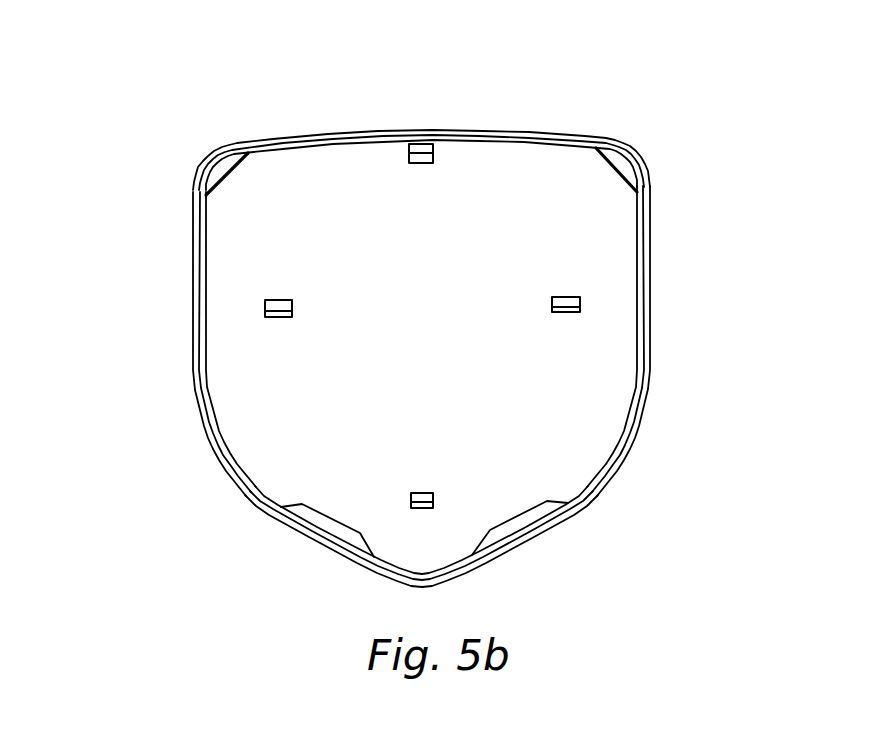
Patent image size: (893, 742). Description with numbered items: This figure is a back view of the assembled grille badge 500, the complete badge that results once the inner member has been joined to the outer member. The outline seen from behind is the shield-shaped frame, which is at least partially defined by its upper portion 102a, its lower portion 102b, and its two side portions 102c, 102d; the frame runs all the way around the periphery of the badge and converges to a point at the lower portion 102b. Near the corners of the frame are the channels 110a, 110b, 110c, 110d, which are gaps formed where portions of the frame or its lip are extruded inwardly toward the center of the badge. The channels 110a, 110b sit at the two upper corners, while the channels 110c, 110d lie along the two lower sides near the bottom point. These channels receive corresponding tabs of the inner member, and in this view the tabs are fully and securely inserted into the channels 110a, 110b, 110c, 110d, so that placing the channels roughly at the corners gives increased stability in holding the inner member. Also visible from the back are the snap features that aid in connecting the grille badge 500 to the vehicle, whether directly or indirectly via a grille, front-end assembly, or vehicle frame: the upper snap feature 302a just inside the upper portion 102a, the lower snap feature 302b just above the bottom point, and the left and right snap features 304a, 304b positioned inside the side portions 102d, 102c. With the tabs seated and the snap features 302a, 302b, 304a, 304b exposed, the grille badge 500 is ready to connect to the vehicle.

The assembled grille badge 500 is at (419, 322).
The upper portion of frame 102a is at (293, 140).
The lower portion of frame 102b is at (398, 572).
The side portion of frame 102c is at (648, 362).
The side portion of frame 102d is at (202, 408).
The channel 110a is at (216, 166).
The channel 110b is at (616, 170).
The channel 110c is at (313, 522).
The channel 110d is at (502, 537).
The upper snap feature 302a is at (423, 143).
The lower snap feature 302b is at (422, 493).
The left snap feature 304a is at (278, 301).
The right snap feature 304b is at (570, 298).